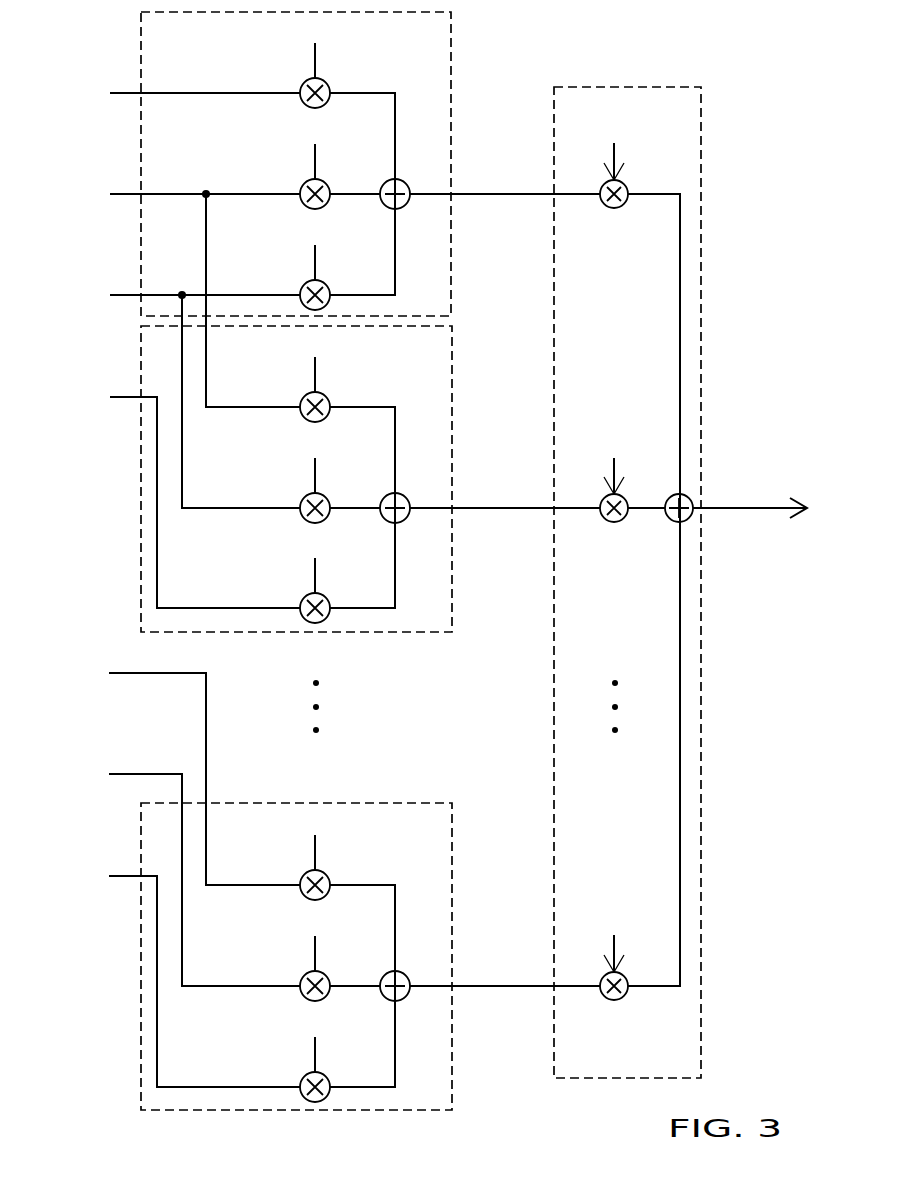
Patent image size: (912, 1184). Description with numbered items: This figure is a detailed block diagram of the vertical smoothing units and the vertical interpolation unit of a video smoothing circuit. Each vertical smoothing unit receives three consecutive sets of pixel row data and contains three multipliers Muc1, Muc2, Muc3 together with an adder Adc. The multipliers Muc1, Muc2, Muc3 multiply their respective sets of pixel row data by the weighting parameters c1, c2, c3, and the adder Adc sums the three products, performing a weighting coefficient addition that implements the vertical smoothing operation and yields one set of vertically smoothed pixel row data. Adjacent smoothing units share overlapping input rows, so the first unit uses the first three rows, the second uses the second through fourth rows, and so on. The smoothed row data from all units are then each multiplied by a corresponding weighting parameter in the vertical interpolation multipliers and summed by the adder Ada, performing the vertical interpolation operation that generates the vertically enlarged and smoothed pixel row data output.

The multiplier Muc1 is at (303, 84).
The multiplier Muc2 is at (303, 185).
The multiplier Muc3 is at (303, 286).
The weighting parameter c1 is at (316, 441).
The weighting parameter c2 is at (316, 542).
The weighting parameter c3 is at (316, 643).
The adder Adc is at (407, 187).
The adder Ada is at (688, 519).